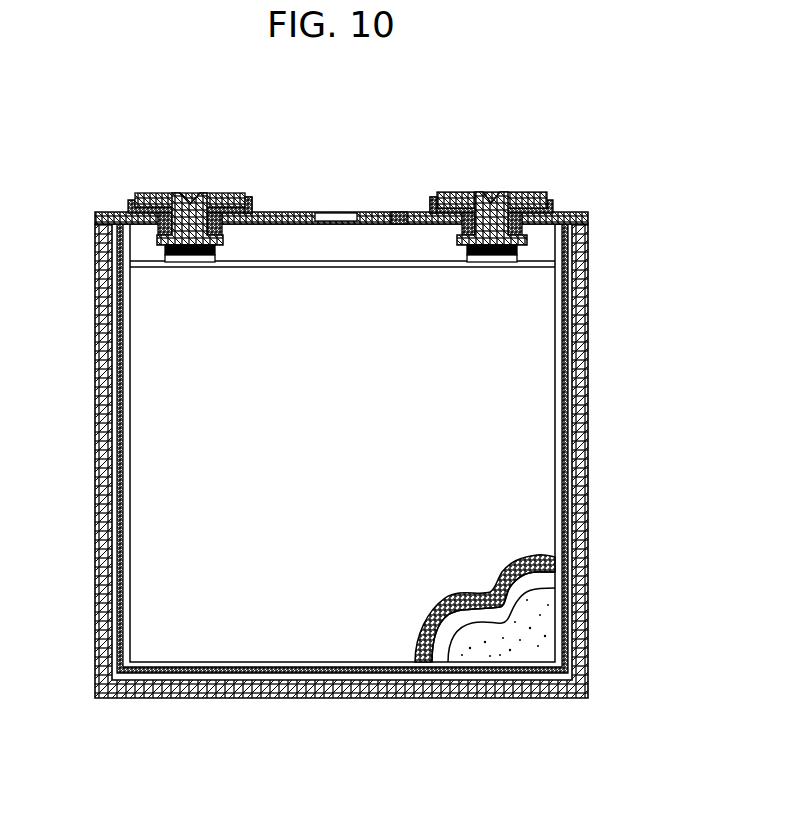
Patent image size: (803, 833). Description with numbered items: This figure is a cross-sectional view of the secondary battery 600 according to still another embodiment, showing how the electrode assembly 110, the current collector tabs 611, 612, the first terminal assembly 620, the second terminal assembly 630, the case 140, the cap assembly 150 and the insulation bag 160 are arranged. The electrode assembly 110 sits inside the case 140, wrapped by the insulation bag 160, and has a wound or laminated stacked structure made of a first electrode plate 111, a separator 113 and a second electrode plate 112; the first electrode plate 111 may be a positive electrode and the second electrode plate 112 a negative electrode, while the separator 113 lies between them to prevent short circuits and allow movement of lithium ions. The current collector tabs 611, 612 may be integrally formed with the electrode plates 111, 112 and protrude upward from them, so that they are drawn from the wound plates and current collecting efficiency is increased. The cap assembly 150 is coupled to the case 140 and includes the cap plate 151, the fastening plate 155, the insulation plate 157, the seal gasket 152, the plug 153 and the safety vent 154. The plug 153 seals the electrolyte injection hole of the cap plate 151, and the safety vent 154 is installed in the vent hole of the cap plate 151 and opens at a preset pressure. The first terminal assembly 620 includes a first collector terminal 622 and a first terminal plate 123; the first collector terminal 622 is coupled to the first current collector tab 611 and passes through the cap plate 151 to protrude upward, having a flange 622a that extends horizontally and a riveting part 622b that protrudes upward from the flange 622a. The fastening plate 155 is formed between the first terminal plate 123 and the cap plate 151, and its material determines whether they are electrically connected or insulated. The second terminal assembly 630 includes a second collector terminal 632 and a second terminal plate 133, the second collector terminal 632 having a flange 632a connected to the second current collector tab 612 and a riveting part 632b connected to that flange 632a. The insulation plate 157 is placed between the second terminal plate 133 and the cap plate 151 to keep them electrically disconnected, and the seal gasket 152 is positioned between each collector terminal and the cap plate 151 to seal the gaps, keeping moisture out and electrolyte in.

The secondary battery 600 is at (650, 92).
The electrode assembly 110 is at (297, 676).
The first electrode plate 111 is at (522, 650).
The second electrode plate 112 is at (422, 656).
The separator 113 is at (444, 657).
The first terminal plate 123 is at (233, 194).
The second terminal plate 133 is at (453, 192).
The case 140 is at (585, 398).
The cap assembly 150 is at (313, 203).
The cap plate 151 is at (283, 212).
The seal gasket 152 is at (213, 213).
The plug 153 is at (401, 212).
The safety vent 154 is at (343, 212).
The fastening plate 155 is at (249, 196).
The insulation plate 157 is at (432, 195).
The insulation bag 160 is at (365, 674).
The first current collector tab 611 is at (193, 258).
The second current collector tab 612 is at (492, 258).
The first terminal assembly 620 is at (179, 208).
The first collector terminal 622 is at (158, 154).
The flange 622a is at (148, 194).
The riveting part 622b is at (177, 195).
The second terminal assembly 630 is at (527, 192).
The second collector terminal 632 is at (515, 152).
The flange 632a is at (502, 131).
The riveting part 632b is at (505, 195).